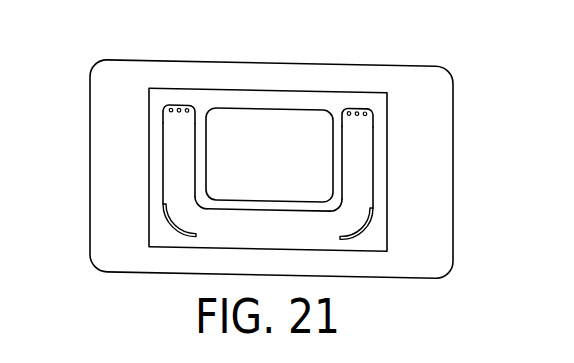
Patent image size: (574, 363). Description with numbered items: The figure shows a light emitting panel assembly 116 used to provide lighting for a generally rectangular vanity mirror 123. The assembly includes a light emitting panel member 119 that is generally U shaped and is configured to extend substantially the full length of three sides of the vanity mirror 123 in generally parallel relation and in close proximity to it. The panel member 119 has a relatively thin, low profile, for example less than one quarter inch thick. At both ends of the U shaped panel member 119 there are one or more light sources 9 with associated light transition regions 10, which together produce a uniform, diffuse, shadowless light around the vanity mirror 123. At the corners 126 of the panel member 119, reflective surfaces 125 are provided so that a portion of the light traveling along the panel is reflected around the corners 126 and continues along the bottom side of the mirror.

The light source 9 is at (178, 110).
The light transition region 10 is at (162, 117).
The light emitting panel assembly 116 is at (145, 188).
The light emitting panel member 119 is at (172, 152).
The vanity mirror 123 is at (325, 100).
The reflective surface 125 is at (170, 228).
The corner 126 is at (186, 222).